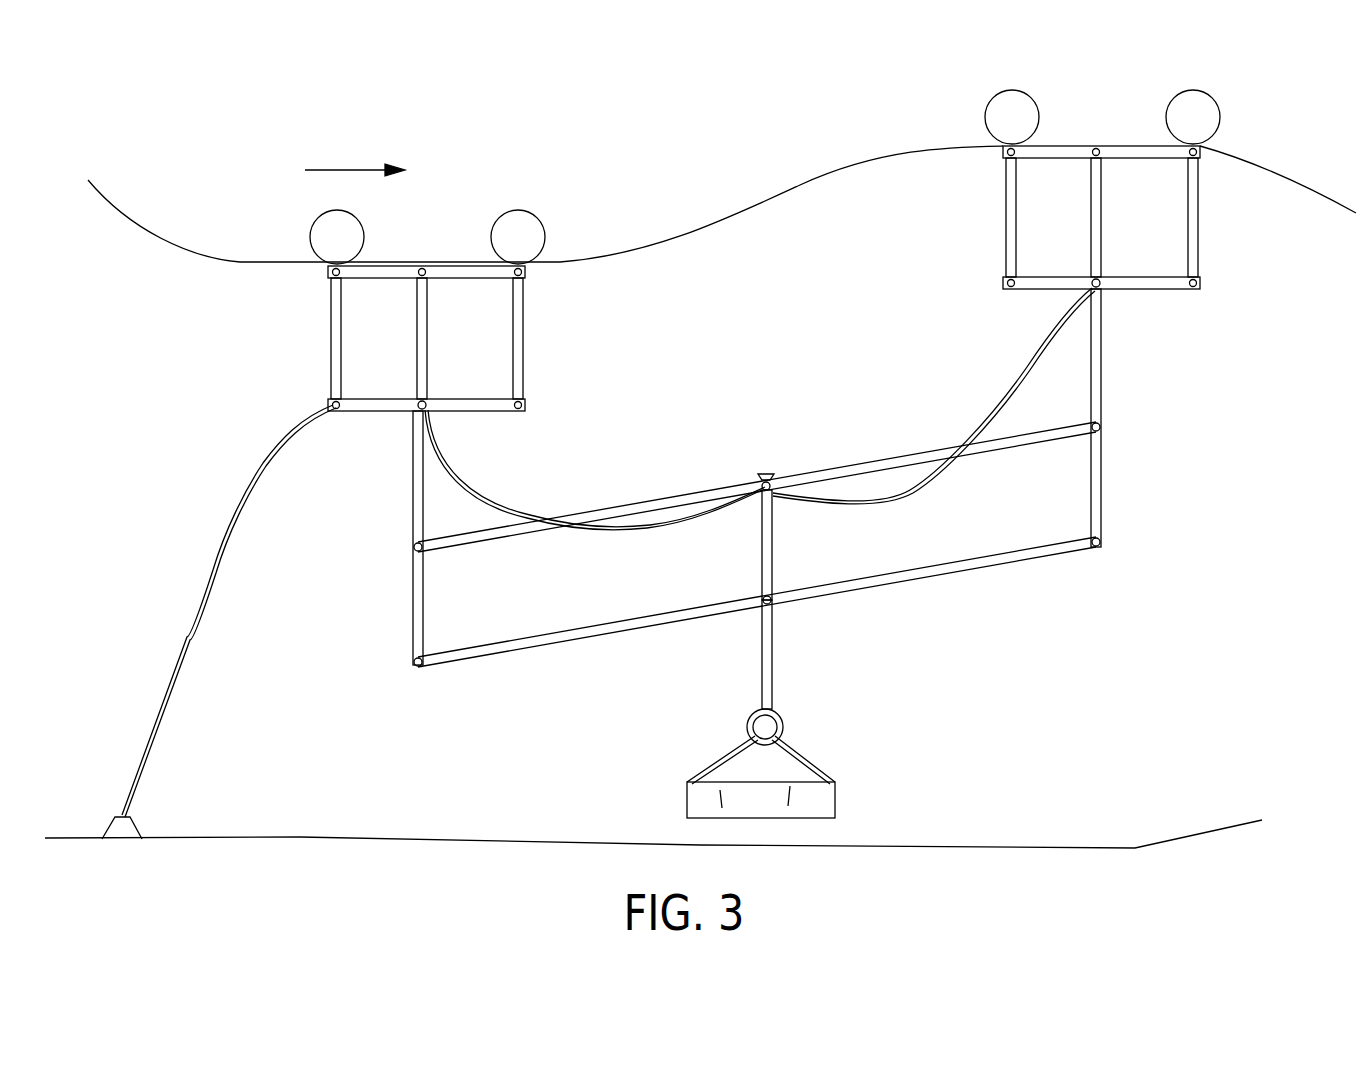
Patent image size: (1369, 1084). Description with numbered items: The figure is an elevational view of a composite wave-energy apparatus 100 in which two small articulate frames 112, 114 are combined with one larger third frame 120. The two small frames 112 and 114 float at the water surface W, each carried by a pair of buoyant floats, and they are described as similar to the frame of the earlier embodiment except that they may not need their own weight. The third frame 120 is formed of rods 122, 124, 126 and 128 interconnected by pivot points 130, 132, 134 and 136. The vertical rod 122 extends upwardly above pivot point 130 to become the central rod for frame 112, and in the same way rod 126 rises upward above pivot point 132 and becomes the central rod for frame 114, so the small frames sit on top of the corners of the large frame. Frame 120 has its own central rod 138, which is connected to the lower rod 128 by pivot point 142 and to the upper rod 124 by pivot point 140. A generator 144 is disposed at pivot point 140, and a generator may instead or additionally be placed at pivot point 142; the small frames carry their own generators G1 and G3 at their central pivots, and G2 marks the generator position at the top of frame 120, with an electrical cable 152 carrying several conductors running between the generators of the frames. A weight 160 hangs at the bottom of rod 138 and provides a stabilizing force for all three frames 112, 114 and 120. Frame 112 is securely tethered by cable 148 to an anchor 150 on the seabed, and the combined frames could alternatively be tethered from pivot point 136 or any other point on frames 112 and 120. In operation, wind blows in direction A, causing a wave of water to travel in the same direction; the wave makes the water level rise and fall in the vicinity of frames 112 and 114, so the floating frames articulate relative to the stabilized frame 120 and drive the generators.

The apparatus 100 is at (654, 464).
The articulate frame 112 is at (284, 340).
The articulate frame 114 is at (990, 216).
The third frame 120 is at (764, 499).
The vertical rod 122 is at (422, 576).
The rod 124 is at (582, 518).
The rod 126 is at (1090, 478).
The rod 128 is at (885, 583).
The pivot point 130 is at (411, 547).
The pivot point 132 is at (1100, 428).
The pivot point 134 is at (1104, 544).
The pivot point 136 is at (410, 662).
The central rod 138 is at (772, 682).
The pivot point 140 is at (778, 474).
The pivot point 142 is at (773, 606).
The generator 144 is at (764, 472).
The cable 148 is at (255, 477).
The anchor 150 is at (120, 815).
The cable 152 is at (468, 483).
The weight 160 is at (838, 798).
The first generator G1 is at (424, 400).
The second generator G2 is at (760, 480).
The third generator G3 is at (1102, 292).
The water surface W is at (238, 252).
The direction A is at (355, 160).